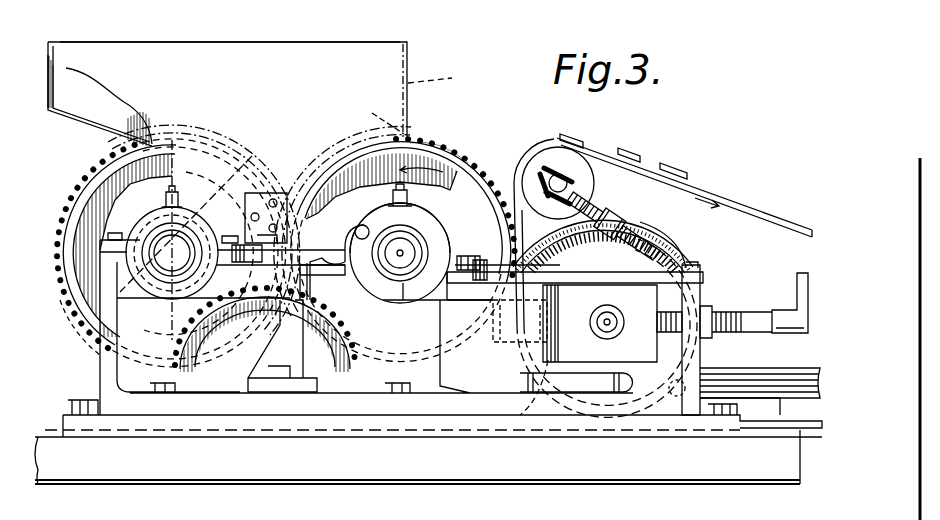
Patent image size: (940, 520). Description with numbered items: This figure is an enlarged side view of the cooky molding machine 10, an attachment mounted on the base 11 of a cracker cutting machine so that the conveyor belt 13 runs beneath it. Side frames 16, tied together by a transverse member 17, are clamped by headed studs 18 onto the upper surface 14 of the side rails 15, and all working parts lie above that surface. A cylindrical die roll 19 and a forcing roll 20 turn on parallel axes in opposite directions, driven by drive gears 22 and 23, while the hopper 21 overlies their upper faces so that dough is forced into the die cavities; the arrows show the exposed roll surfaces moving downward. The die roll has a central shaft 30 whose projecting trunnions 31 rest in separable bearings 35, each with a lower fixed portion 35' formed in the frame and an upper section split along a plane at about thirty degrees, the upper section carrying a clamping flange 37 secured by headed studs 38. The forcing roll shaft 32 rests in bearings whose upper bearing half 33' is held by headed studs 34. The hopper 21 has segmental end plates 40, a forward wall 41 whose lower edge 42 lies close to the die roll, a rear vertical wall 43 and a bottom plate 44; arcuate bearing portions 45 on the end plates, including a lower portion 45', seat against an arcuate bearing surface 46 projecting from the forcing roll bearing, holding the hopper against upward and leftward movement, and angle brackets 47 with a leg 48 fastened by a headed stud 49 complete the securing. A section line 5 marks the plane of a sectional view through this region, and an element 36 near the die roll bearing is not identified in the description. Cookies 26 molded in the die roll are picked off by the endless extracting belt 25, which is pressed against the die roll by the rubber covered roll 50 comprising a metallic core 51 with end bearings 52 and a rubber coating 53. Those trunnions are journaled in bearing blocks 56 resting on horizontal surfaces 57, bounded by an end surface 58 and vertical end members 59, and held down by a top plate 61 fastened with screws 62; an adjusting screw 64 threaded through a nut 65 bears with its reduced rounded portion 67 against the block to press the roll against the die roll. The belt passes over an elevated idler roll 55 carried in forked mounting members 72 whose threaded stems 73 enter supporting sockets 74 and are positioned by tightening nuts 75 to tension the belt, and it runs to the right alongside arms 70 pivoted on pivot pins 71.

The section line 5 is at (171, 324).
The cooky molding machine 10 is at (476, 148).
The base 11 is at (800, 484).
The conveyor belt 13 is at (784, 442).
The upper surface 14 is at (48, 435).
The side rails 15 is at (542, 468).
The side frames 16 is at (470, 385).
The transverse member 17 is at (298, 352).
The headed studs 18 is at (740, 410).
The die roll 19 is at (445, 136).
The forcing roll 20 is at (84, 168).
The hopper 21 is at (285, 30).
The drive gear 22 is at (338, 322).
The drive gear 23 is at (265, 335).
The extracting belt 25 is at (646, 178).
The cookies 26 is at (527, 152).
The central shaft 30 is at (393, 243).
The trunnions 31 is at (410, 236).
The central shaft 32 is at (166, 240).
The upper bearing half 33' is at (202, 231).
The headed studs 34 is at (112, 238).
The separable bearings 35 is at (413, 221).
The lower fixed bearing portion 35' is at (399, 288).
The arm 36 is at (355, 231).
The clamping flange 37 is at (485, 256).
The headed studs 38 is at (464, 250).
The end plates 40 is at (330, 56).
The forward wall 41 is at (442, 73).
The lower edge 42 is at (376, 116).
The vertical wall 43 is at (52, 76).
The bottom plate 44 is at (106, 130).
The arcuate bearing portions 45 is at (198, 253).
The lower portion of arcuate bearing surface 45' is at (204, 230).
The arcuate bearing surface 46 is at (92, 306).
The angle brackets 47 is at (300, 182).
The leg 48 is at (246, 232).
The headed stud 49 is at (268, 198).
The rubber covered roll 50 is at (596, 275).
The metallic core 51 is at (668, 250).
The end bearings 52 is at (600, 325).
The rubber coating 53 is at (562, 254).
The idler roll 55 is at (575, 172).
The bearing blocks 56 is at (633, 344).
The horizontal surfaces 57 is at (548, 400).
The end surface 58 is at (543, 340).
The vertical end members 59 is at (702, 406).
The top plate 61 is at (618, 278).
The screws 62 is at (706, 268).
The adjusting screw 64 is at (744, 313).
The nut 65 is at (712, 314).
The reduced rounded portion 67 is at (654, 318).
The arms 70 is at (770, 378).
The pivot pins 71 is at (706, 378).
The forked mounting members 72 is at (592, 203).
The threaded stem 73 is at (622, 212).
The supporting socket 74 is at (656, 244).
The tightening nut 75 is at (645, 228).